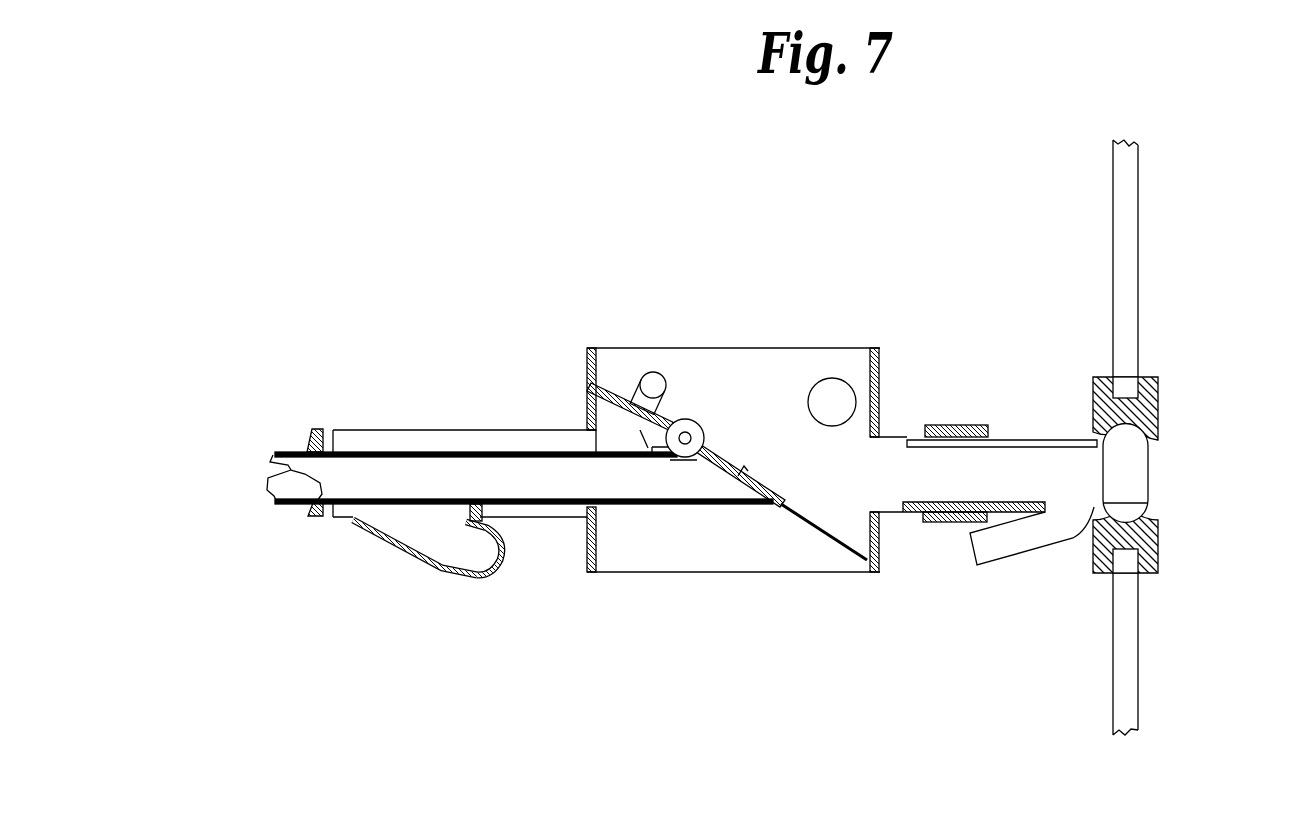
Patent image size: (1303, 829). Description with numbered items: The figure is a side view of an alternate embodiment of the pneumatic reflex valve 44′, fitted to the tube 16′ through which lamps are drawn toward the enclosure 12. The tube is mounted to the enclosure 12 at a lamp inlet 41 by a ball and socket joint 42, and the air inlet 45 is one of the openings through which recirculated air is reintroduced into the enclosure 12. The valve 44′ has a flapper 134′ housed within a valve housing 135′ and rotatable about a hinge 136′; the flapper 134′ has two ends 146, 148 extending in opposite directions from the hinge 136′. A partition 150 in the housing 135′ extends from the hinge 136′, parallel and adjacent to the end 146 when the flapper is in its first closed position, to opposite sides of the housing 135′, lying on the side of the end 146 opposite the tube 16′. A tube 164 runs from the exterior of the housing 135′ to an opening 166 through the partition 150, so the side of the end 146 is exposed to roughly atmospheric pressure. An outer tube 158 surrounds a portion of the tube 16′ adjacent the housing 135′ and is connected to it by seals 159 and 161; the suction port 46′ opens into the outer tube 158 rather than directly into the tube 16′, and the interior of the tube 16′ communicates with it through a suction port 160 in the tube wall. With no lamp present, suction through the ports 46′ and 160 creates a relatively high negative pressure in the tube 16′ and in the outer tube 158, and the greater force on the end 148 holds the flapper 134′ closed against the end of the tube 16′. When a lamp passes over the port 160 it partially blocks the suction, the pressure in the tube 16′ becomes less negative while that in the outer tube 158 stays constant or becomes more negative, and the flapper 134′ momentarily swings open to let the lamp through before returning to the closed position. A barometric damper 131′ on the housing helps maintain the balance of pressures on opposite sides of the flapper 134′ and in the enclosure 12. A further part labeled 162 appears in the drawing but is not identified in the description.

The enclosure 12 is at (1127, 300).
The tube 16′ is at (273, 458).
The lamp inlet 41 is at (1130, 484).
The ball and socket joint 42 is at (1160, 420).
The pneumatic reflex valve 44′ is at (472, 707).
The air inlet 45 is at (1010, 565).
The suction port 46′ is at (476, 578).
The barometric damper 131′ is at (843, 395).
The flapper 134′ is at (743, 471).
The valve housing 135′ is at (866, 575).
The hinge 136′ is at (685, 419).
The end of flapper 146 is at (612, 456).
The end of flapper 148 is at (778, 498).
The partition 150 is at (604, 388).
The outer tube 158 is at (397, 431).
The seal 159 is at (308, 450).
The suction port 160 is at (413, 557).
The seal 161 is at (466, 516).
The sleeve end 162 is at (585, 442).
The tube 164 is at (653, 372).
The opening 166 is at (647, 462).